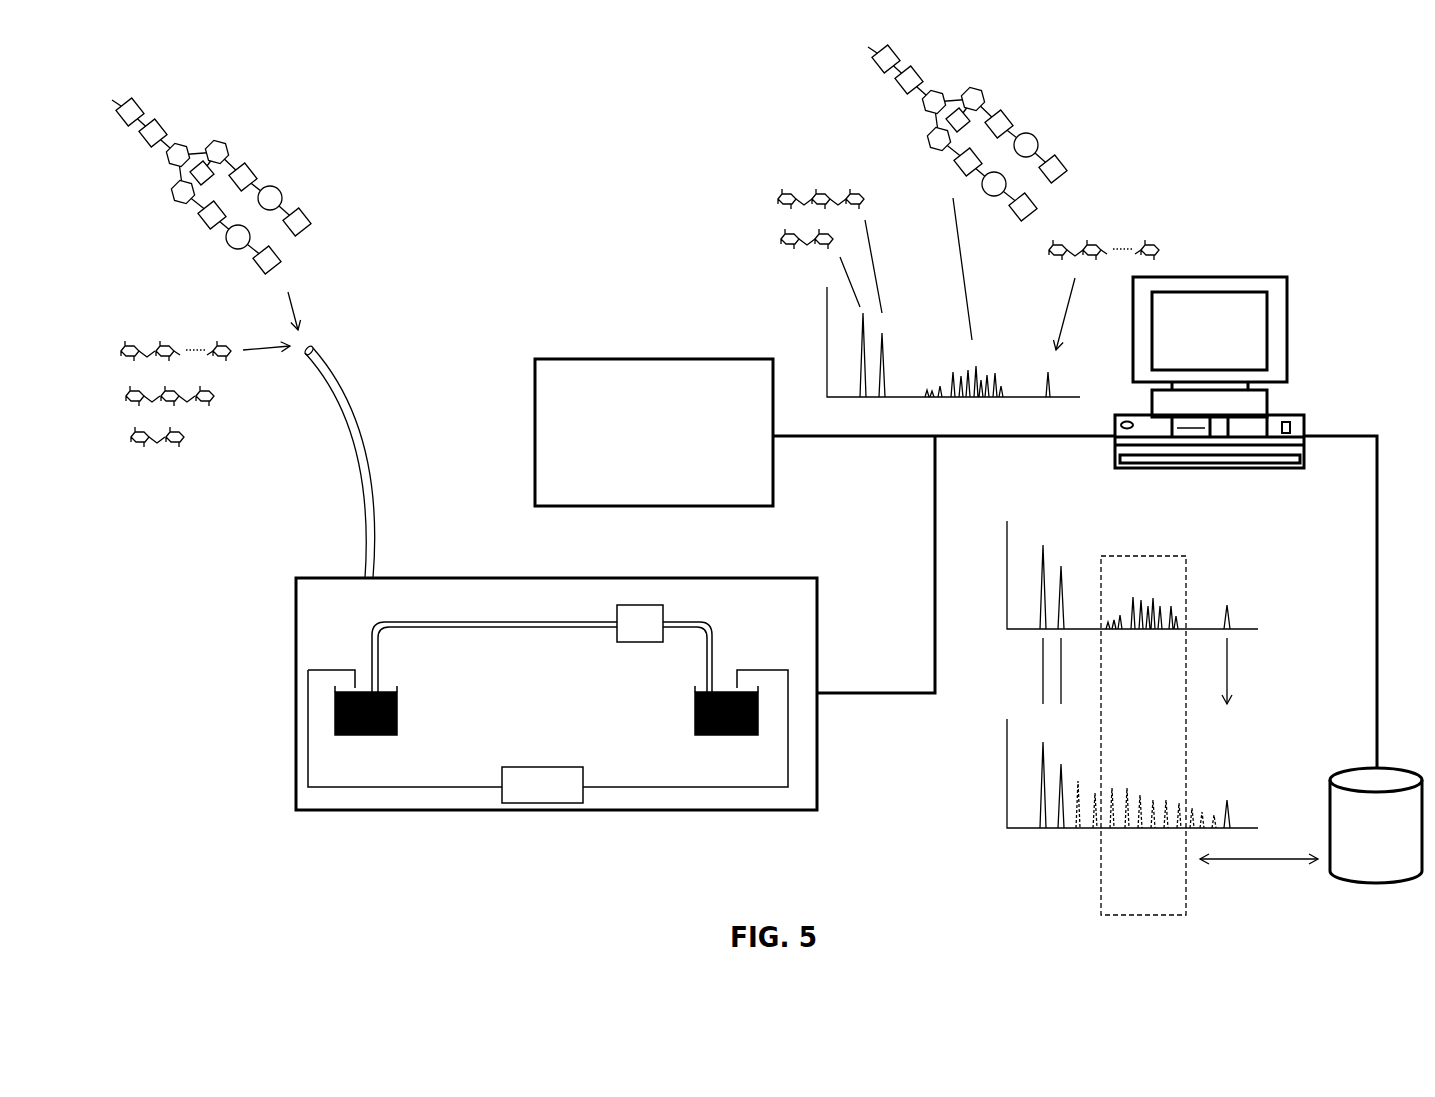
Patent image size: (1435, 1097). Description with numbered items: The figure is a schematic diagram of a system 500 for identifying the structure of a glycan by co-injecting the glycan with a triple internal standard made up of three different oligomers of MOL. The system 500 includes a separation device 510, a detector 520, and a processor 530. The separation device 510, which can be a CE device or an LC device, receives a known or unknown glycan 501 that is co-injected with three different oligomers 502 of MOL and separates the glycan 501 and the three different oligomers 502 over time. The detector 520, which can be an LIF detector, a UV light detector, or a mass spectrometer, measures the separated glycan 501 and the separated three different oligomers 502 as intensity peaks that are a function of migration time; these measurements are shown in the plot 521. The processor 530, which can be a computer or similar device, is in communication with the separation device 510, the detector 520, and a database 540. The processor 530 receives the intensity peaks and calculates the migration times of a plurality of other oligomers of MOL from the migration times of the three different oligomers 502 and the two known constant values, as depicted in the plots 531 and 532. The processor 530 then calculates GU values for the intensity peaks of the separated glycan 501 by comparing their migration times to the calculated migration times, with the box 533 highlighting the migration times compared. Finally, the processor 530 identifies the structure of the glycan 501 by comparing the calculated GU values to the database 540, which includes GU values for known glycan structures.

The system 500 is at (531, 903).
The glycan 501 is at (293, 160).
The three different oligomers of MOL 502 is at (160, 477).
The separation device 510 is at (445, 578).
The detector 520 is at (655, 359).
The plot 521 is at (880, 196).
The processor 530 is at (1210, 277).
The plot 531 is at (1078, 535).
The plot 532 is at (1025, 712).
The box 533 is at (1186, 575).
The database 540 is at (1335, 768).